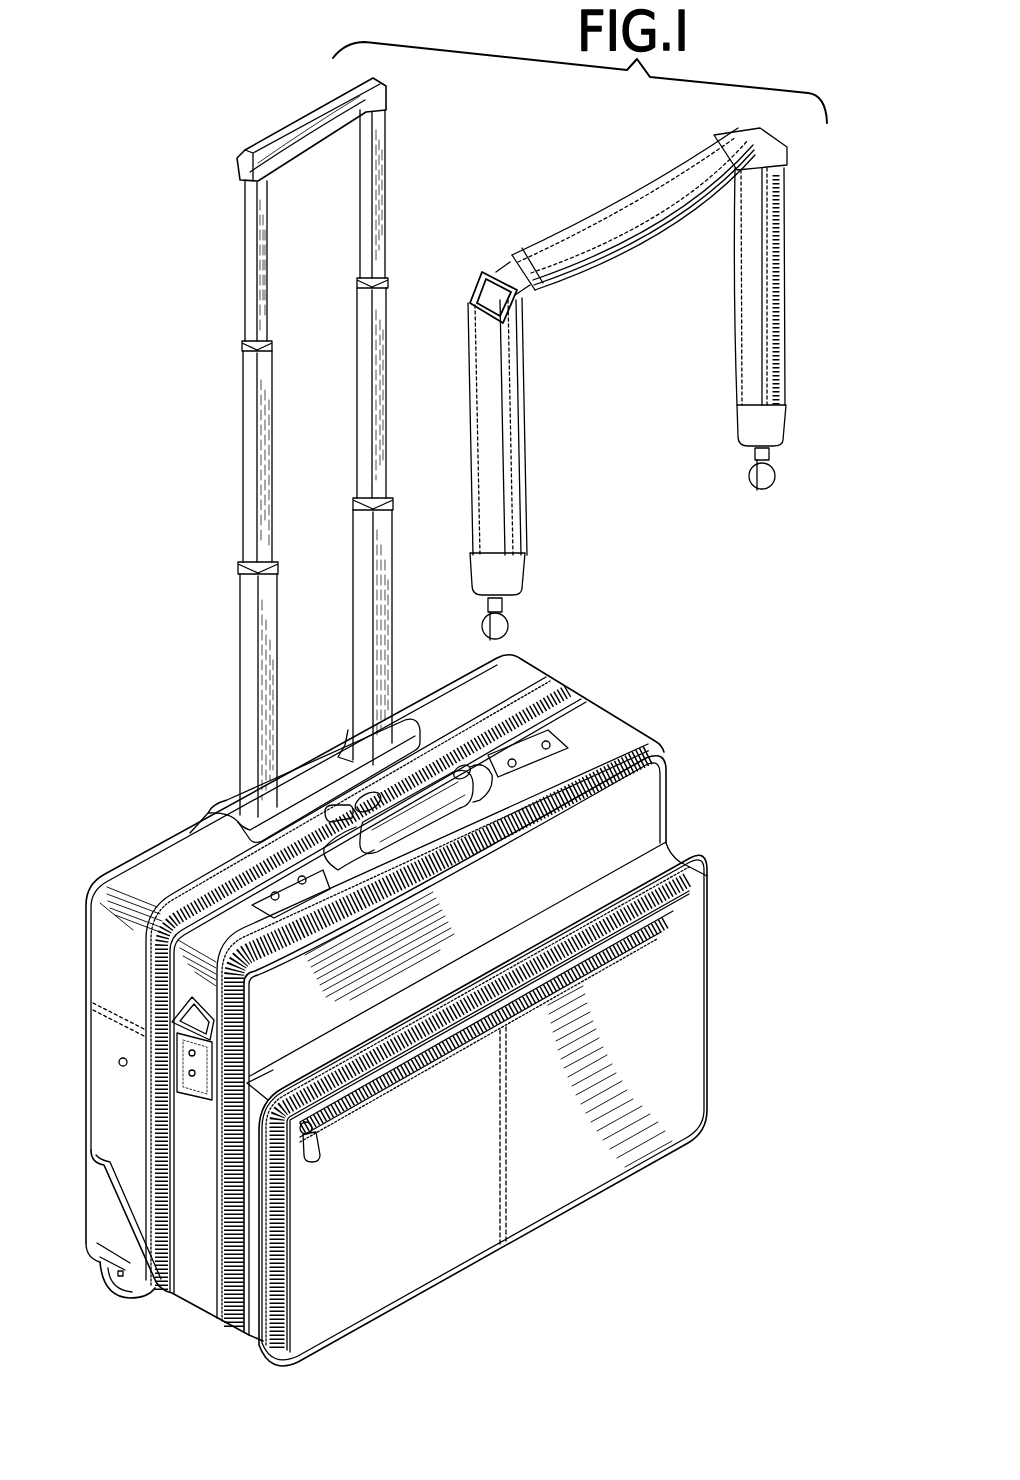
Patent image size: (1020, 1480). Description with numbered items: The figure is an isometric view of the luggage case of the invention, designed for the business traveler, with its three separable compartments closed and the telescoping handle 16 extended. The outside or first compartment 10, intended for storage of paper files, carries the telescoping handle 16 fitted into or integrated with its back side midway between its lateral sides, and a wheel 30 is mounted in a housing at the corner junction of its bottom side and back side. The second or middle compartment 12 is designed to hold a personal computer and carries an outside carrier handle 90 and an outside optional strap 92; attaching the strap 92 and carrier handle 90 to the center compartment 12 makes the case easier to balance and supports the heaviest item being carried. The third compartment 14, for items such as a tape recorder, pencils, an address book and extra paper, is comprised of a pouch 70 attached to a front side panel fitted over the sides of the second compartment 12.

The first compartment 10 is at (145, 877).
The second or middle compartment 12 is at (603, 725).
The third compartment 14 is at (683, 972).
The telescoping handle 16 is at (240, 503).
The wheel 30 is at (133, 1296).
The pouch 70 is at (683, 1040).
The outside carrier handle 90 is at (455, 797).
The outside optional strap 92 is at (520, 497).